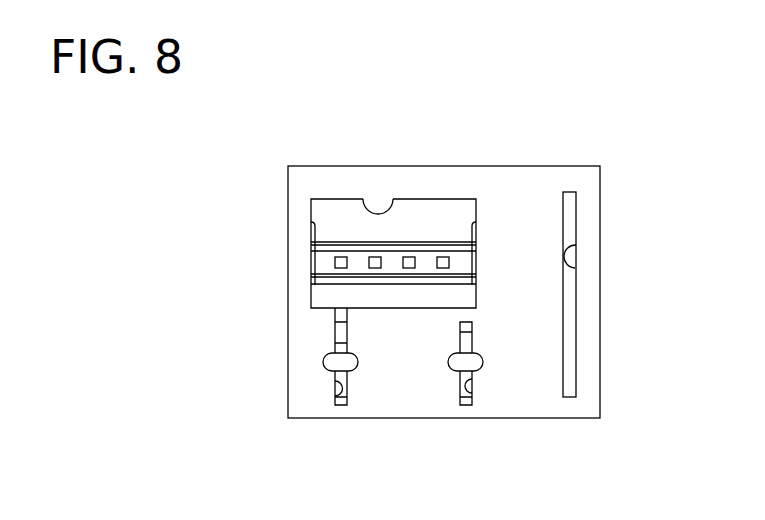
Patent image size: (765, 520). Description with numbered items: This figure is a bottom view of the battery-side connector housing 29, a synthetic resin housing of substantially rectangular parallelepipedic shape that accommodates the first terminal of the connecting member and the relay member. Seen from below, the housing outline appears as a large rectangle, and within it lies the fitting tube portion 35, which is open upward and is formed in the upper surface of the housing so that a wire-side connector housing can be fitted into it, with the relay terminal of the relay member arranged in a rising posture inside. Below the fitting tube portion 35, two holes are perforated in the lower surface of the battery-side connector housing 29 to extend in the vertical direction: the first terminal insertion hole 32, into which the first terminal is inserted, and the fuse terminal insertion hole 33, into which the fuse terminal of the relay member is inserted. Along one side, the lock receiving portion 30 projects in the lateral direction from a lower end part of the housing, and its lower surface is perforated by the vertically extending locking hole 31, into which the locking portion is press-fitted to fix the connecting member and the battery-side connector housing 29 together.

The battery-side connector housing 29 is at (468, 177).
The lock receiving portion 30 is at (593, 201).
The locking hole 31 is at (575, 268).
The first terminal insertion hole 32 is at (335, 396).
The fuse terminal insertion hole 33 is at (470, 391).
The fitting tube portion 35 is at (363, 200).